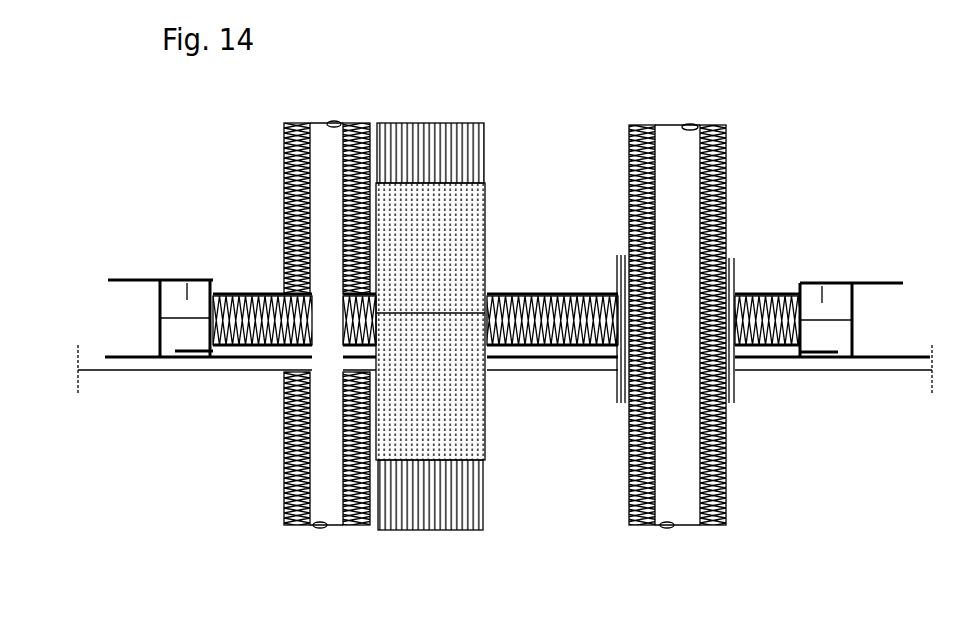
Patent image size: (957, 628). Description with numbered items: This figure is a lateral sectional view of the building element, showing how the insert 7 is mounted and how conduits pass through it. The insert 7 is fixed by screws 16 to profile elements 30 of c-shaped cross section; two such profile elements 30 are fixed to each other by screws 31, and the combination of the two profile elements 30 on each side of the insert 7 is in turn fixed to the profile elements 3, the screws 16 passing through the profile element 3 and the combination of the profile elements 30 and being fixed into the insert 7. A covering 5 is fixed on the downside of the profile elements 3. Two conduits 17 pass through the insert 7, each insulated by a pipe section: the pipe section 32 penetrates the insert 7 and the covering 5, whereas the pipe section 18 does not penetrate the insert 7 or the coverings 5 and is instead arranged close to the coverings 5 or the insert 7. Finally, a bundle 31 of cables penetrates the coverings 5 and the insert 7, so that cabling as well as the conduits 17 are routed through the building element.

The profile element 3 is at (145, 358).
The covering 5 is at (533, 366).
The insert 7 is at (544, 258).
The screw 16 is at (160, 318).
The conduit 17 is at (330, 515).
The pipe section 18 is at (290, 468).
The profile element of c-shaped cross section 30 is at (204, 278).
The bundle of cables 31 is at (472, 470).
The pipe section 32 is at (722, 466).